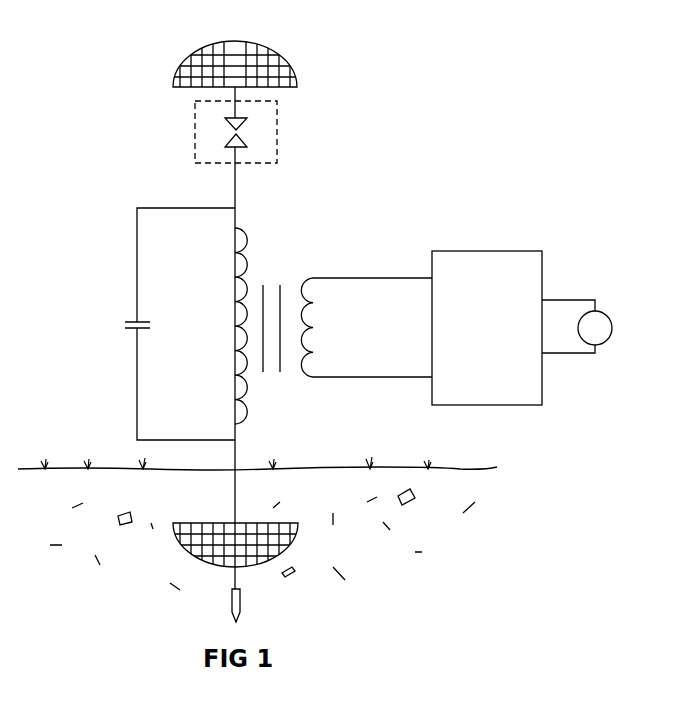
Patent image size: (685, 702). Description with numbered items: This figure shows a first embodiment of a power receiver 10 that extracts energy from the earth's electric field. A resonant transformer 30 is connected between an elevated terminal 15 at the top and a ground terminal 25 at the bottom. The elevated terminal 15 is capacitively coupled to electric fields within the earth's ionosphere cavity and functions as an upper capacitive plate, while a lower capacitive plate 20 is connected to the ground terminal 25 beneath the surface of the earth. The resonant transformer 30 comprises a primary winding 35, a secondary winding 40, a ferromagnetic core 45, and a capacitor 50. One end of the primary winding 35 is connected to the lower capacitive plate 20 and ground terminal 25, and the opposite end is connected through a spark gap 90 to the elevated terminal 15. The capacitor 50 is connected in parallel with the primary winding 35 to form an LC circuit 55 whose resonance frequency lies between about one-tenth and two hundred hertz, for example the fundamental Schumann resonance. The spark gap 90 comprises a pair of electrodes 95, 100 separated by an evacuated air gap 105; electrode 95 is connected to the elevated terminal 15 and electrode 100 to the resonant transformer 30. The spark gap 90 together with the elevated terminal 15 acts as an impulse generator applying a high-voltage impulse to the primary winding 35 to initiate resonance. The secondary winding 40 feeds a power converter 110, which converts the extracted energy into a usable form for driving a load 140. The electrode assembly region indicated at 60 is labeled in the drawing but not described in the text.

The power receiver 10 is at (448, 88).
The elevated terminal 15 is at (202, 53).
The lower capacitive plate 20 is at (190, 545).
The ground terminal 25 is at (240, 605).
The resonant transformer 30 is at (295, 260).
The primary winding 35 is at (247, 418).
The secondary winding 40 is at (301, 380).
The ferromagnetic core 45 is at (263, 290).
The capacitor 50 is at (135, 330).
The LC circuit 55 is at (362, 210).
The electrode assembly 60 is at (165, 96).
The spark gap 90 is at (195, 150).
The electrode 95 is at (258, 123).
The electrode 100 is at (241, 148).
The evacuated air gap 105 is at (253, 135).
The power converter 110 is at (510, 251).
The load 140 is at (612, 318).